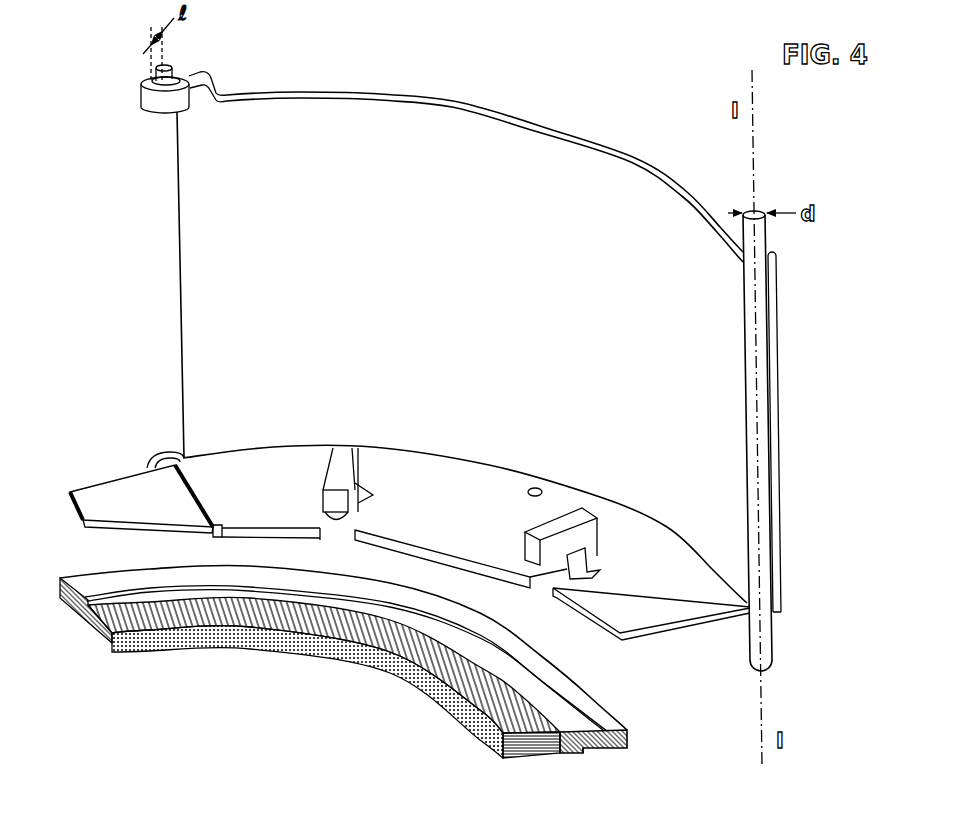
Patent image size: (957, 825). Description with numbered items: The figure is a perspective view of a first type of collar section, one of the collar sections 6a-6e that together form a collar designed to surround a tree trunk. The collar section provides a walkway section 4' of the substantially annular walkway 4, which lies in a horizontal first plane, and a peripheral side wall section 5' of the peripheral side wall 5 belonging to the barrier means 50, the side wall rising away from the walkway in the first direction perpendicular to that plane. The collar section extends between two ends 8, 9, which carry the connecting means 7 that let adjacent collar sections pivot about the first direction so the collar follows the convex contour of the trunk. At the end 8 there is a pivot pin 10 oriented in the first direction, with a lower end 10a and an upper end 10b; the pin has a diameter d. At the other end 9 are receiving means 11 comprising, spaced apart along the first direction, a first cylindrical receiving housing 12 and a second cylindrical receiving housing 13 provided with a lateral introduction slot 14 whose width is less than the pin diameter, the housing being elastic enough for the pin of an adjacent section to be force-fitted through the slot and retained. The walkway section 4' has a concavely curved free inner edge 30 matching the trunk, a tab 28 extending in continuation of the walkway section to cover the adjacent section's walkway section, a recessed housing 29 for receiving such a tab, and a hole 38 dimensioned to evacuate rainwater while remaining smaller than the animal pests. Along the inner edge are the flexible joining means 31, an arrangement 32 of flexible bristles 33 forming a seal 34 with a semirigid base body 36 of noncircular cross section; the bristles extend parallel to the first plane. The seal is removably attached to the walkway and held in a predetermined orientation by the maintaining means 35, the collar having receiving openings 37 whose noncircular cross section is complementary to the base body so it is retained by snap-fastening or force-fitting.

The substantially annular walkway 4 is at (465, 495).
The walkway section 4' is at (407, 500).
The peripheral side wall 5 is at (485, 176).
The peripheral side wall section 5' is at (477, 279).
The barrier means 50 is at (457, 99).
The collar sections 6a-6e is at (350, 91).
The connecting means 7 is at (224, 76).
The end 8 is at (787, 430).
The end 9 is at (170, 275).
The pivot pin 10 is at (752, 427).
The lower end of the pivot pin 10a is at (772, 643).
The upper end of the pivot pin 10b is at (762, 244).
The receiving means 11 is at (150, 112).
The first cylindrical receiving housing 12 is at (172, 455).
The second cylindrical receiving housing 13 is at (171, 72).
The lateral introduction slot 14 is at (150, 79).
The tab 28 is at (87, 490).
The recessed housing 29 is at (588, 615).
The concavely curved free inner edge 30 is at (418, 545).
The flexible joining means 31 is at (645, 722).
The arrangement of flexible bristles 32 is at (634, 743).
The flexible bristles 33 is at (513, 758).
The seal having flexible bristles 34 is at (278, 660).
The means for maintaining the seal 35 is at (605, 528).
The semirigid base body 36 is at (583, 753).
The receiving opening 37 is at (576, 564).
The hole 38 is at (538, 489).